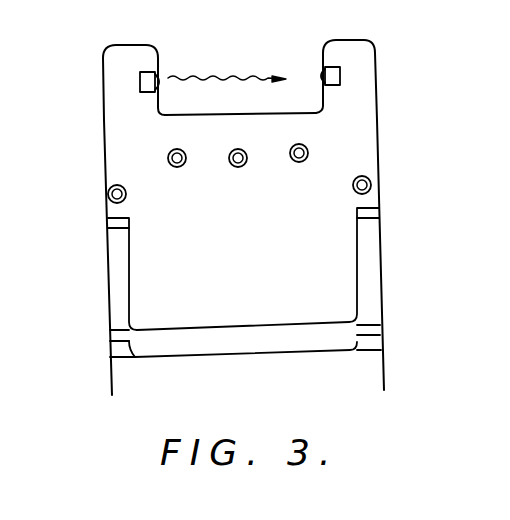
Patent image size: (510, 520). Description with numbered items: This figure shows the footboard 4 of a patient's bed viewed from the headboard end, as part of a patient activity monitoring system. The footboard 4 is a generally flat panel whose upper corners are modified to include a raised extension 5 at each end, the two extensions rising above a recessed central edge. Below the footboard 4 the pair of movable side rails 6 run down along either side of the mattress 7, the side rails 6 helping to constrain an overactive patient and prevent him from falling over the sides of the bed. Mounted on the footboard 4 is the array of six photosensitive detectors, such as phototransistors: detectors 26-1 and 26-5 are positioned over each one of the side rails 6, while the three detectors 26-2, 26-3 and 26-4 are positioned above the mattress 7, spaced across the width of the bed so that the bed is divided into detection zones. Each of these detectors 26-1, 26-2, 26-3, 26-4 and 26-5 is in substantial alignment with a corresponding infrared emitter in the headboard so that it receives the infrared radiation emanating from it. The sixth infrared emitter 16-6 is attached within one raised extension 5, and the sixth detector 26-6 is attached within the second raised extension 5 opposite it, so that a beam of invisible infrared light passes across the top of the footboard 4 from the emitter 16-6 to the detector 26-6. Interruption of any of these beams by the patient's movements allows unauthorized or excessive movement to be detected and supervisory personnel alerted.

The footboard 4 is at (256, 285).
The raised extension 5 is at (103, 82).
The side rails 6 is at (118, 295).
The mattress 7 is at (253, 336).
The infrared emitter 16-6 is at (161, 80).
The photodetector 26-6 is at (318, 74).
The photodetector 26-1 is at (371, 188).
The photodetector 26-2 is at (308, 153).
The photodetector 26-3 is at (238, 167).
The photodetector 26-4 is at (168, 158).
The photodetector 26-5 is at (108, 199).